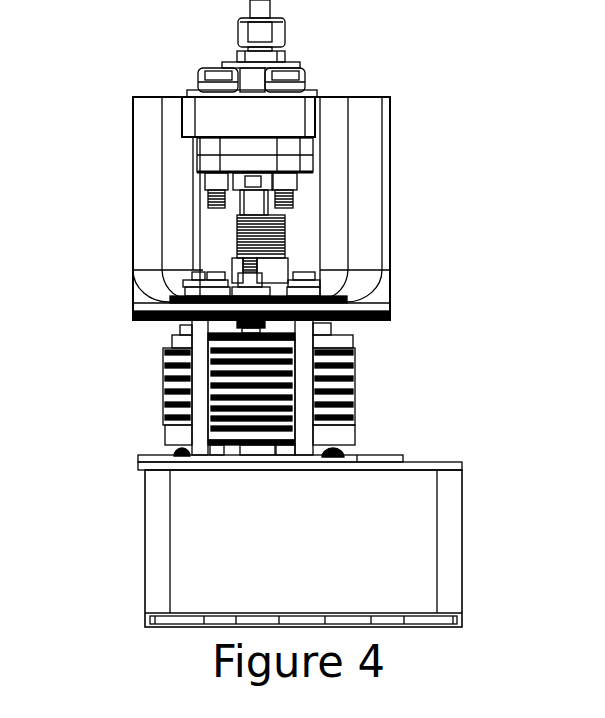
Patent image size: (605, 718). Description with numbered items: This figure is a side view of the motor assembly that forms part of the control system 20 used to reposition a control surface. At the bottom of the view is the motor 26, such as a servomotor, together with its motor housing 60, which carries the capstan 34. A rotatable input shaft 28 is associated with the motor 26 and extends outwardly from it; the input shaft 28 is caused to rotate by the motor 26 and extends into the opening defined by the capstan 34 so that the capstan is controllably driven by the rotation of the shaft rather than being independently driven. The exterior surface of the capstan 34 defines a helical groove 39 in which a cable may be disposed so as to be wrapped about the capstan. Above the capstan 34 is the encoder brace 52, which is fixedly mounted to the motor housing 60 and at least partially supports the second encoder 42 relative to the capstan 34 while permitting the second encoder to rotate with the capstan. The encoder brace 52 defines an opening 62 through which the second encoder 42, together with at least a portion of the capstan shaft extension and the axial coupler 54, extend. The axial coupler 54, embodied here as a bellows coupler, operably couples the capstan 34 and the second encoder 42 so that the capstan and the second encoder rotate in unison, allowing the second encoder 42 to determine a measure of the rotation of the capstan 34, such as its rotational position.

The control system 20 is at (325, 313).
The second encoder 42 is at (255, 76).
The encoder brace 52 is at (373, 158).
The opening 62 is at (307, 218).
The axial coupler 54 is at (240, 237).
The capstan 34 is at (343, 373).
The helical groove 39 is at (353, 417).
The input shaft 28 is at (255, 447).
The motor 26 is at (448, 517).
The motor housing 60 is at (450, 587).